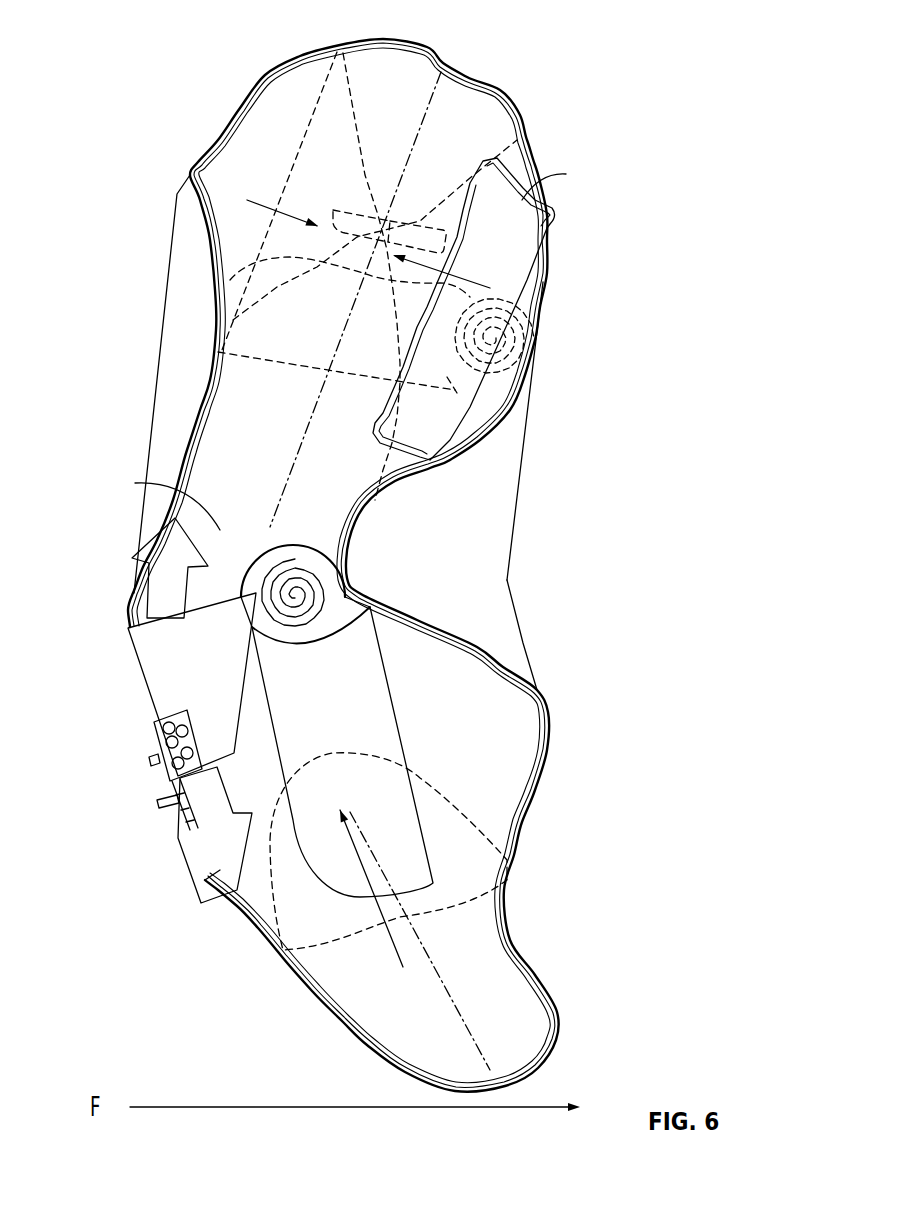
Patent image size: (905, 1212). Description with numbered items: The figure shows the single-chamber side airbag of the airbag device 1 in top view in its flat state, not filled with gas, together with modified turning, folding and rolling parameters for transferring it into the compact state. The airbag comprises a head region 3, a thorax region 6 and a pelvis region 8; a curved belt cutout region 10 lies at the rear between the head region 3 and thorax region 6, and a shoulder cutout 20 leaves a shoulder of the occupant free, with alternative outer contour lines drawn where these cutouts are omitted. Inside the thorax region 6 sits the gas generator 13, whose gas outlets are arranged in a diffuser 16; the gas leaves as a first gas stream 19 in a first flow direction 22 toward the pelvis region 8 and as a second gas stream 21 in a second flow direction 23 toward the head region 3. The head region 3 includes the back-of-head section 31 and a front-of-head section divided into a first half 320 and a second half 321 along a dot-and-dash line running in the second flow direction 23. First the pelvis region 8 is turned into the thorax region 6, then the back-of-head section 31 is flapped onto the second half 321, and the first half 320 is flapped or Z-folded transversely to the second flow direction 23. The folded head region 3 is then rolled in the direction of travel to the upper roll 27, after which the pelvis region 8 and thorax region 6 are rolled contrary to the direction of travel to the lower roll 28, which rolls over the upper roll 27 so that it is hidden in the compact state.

The airbag device 1 is at (85, 37).
The head region 3 is at (398, 118).
The thorax region 6 is at (443, 696).
The pelvis region 8 is at (441, 1018).
The belt cutout region 10 is at (188, 406).
The gas generator 13 is at (170, 752).
The diffuser 16 is at (224, 673).
The first gas stream 19 is at (212, 841).
The shoulder cutout 20 is at (463, 548).
The second gas stream 21 is at (170, 550).
The first flow direction 22 is at (253, 773).
The second flow direction 23 is at (161, 499).
The upper roll 27 is at (316, 338).
The lower roll 28 is at (343, 718).
The back-of-head section 31 is at (273, 156).
The first half 320 is at (438, 206).
The second half 321 is at (373, 206).